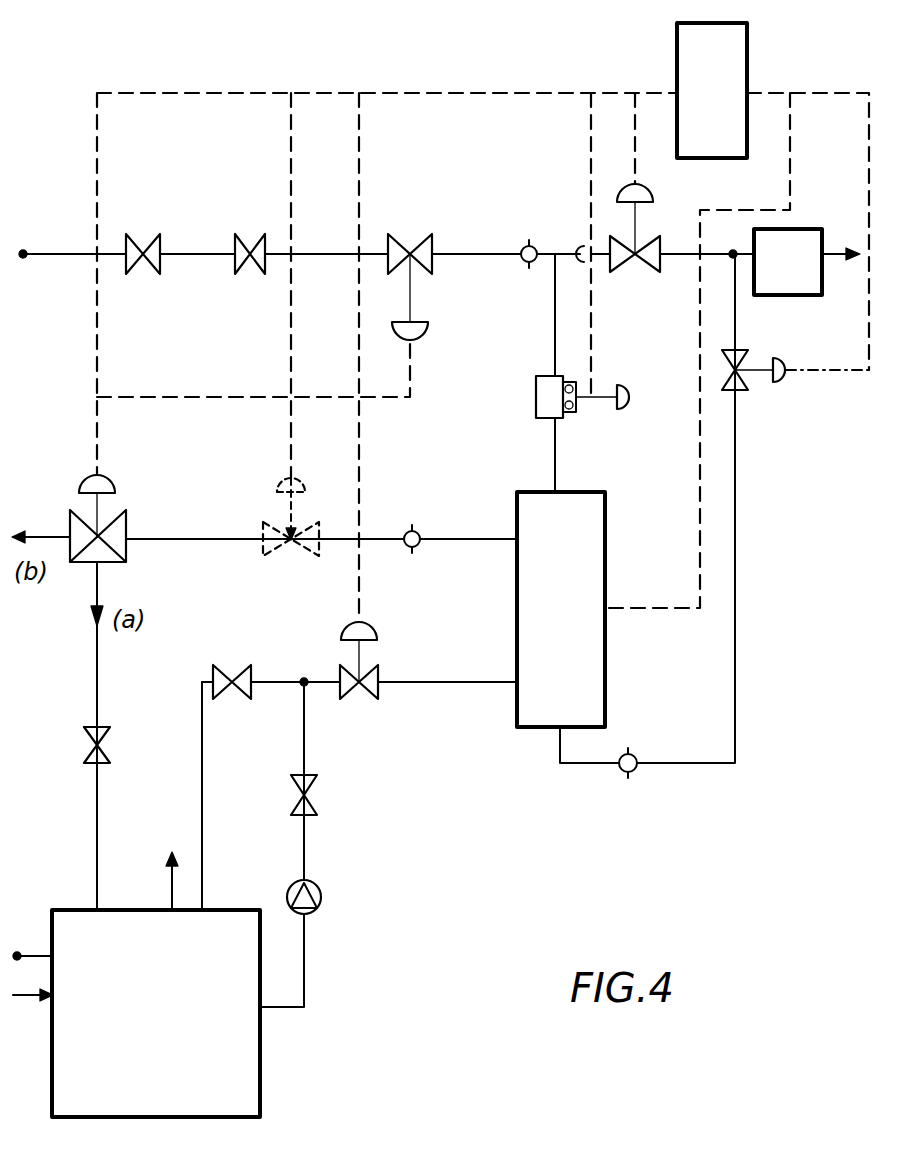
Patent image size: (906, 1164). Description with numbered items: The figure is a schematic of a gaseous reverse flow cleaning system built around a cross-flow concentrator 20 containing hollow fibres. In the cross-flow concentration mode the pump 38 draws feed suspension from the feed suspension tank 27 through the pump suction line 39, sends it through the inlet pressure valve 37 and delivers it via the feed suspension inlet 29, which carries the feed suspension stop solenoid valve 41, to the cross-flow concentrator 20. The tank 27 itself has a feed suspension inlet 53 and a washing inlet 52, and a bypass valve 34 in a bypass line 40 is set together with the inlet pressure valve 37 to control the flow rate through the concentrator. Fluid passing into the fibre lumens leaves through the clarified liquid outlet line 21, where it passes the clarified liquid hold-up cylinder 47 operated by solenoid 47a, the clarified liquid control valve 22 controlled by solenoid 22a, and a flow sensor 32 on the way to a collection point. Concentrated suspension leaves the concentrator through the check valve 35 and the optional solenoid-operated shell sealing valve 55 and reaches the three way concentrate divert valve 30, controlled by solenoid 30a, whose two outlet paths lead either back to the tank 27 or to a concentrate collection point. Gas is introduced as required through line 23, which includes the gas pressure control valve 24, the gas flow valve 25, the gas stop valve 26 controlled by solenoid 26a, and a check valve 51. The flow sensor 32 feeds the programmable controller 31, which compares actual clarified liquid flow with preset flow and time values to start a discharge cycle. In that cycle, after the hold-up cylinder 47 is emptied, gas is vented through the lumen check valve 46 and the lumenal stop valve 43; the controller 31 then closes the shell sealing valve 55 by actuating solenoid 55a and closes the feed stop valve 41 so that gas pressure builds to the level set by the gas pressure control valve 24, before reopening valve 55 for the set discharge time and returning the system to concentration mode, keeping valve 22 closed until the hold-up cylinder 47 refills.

The cross-flow concentrator 20 is at (606, 685).
The clarified liquid outlet line 21 is at (558, 463).
The clarified liquid control valve 22 is at (645, 258).
The solenoid 22a is at (655, 196).
The line 23 is at (50, 254).
The gas pressure control valve 24 is at (160, 240).
The gas flow valve 25 is at (236, 240).
The gas stop valve 26 is at (388, 242).
The solenoid 26a is at (428, 340).
The feed suspension tank 27 is at (262, 1075).
The feed suspension inlet 29 is at (322, 685).
The three way concentrate divert valve 30 is at (70, 513).
The solenoid 30a is at (105, 478).
The programmable controller 31 is at (677, 48).
The flow sensor 32 is at (802, 229).
The bypass valve 34 is at (248, 672).
The check valve 35 is at (418, 548).
The inlet pressure valve 37 is at (314, 792).
The pump 38 is at (320, 890).
The pump suction line 39 is at (306, 975).
The bypass line 40 is at (204, 748).
The feed suspension stop solenoid valve 41 is at (378, 692).
The lumenal stop valve 43 is at (745, 392).
The lumen check valve 46 is at (622, 770).
The clarified liquid hold-up cylinder 47 is at (538, 418).
The solenoid 47a is at (622, 385).
The check valve 51 is at (537, 246).
The washing inlet 52 is at (33, 956).
The feed suspension inlet 53 is at (25, 1000).
The shell sealing valve 55 is at (268, 552).
The solenoid 55a is at (300, 480).